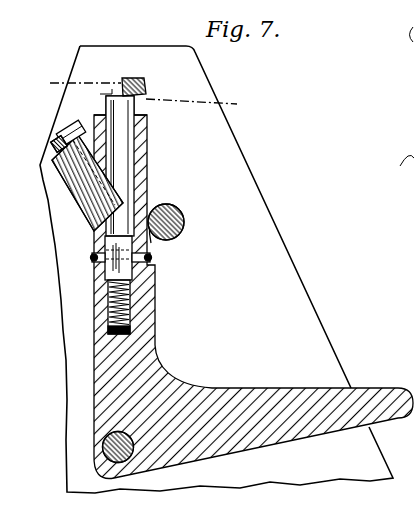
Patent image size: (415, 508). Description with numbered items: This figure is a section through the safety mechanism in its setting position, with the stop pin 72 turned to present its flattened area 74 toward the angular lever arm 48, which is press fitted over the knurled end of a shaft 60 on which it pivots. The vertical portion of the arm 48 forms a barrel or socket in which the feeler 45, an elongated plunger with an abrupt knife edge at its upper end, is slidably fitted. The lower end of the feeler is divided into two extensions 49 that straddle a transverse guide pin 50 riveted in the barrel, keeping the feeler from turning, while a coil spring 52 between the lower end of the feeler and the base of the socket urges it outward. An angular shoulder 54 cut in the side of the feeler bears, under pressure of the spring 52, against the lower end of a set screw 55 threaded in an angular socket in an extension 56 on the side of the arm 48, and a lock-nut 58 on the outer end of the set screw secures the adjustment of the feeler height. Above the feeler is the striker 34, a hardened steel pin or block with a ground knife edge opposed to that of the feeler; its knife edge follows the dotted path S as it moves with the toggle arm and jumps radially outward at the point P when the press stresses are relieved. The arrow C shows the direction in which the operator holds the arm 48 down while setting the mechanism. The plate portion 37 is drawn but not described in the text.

The striker 34 is at (138, 79).
The point P is at (146, 84).
The path of the knife edge of the striker S is at (208, 100).
The lock-nut 58 is at (76, 127).
The feeler 45 is at (107, 103).
The flattened area 74 is at (153, 210).
The stop pin 72 is at (187, 214).
The extension 56 is at (62, 187).
The set screw 55 is at (87, 198).
The angular shoulder 54 is at (103, 252).
The support plate 37 is at (58, 239).
The extensions 49 is at (104, 272).
The transverse guide pin 50 is at (150, 267).
The angular lever arm 48 is at (153, 256).
The coil spring 52 is at (130, 307).
The shaft 60 is at (103, 449).
The arrow C is at (380, 378).